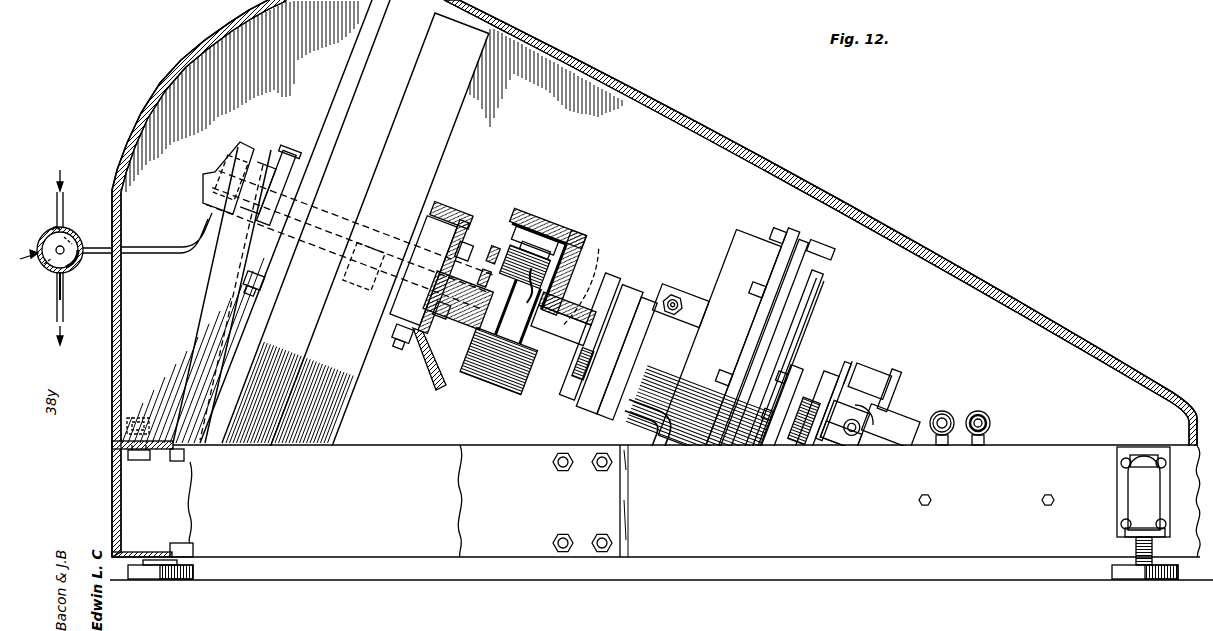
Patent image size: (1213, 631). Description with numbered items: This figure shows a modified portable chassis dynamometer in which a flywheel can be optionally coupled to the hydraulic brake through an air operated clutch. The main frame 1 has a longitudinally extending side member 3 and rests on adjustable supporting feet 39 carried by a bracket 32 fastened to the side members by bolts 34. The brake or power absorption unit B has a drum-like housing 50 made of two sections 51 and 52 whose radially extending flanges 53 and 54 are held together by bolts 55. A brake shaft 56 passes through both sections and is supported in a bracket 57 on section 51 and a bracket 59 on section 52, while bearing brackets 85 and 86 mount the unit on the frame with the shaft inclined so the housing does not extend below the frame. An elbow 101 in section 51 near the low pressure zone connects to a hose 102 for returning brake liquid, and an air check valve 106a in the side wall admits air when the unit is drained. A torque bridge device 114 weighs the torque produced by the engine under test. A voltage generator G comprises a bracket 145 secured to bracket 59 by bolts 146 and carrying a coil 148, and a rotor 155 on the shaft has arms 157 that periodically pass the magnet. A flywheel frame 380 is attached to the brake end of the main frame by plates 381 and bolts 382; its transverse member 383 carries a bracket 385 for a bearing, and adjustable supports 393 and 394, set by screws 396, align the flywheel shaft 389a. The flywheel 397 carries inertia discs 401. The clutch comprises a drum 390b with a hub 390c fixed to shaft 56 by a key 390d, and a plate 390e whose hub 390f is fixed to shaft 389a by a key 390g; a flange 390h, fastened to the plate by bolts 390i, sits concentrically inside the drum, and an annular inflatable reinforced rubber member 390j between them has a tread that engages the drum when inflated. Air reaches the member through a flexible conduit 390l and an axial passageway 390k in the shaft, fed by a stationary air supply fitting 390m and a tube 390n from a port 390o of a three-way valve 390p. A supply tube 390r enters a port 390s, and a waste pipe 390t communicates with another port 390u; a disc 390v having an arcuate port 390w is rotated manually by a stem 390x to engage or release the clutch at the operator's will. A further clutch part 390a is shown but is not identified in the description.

The frame 1 is at (1080, 425).
The side member 3 is at (866, 581).
The bracket 32 is at (1116, 525).
The bolts 34 is at (1135, 455).
The adjustable supporting feet 39 is at (197, 579).
The housing 50 is at (822, 306).
The housing section 51 is at (738, 231).
The housing section 52 is at (810, 322).
The flange 53 is at (790, 229).
The flange 54 is at (806, 240).
The bolts 55 is at (832, 256).
The brake shaft 56 is at (602, 295).
The bracket 57 is at (645, 305).
The bracket 59 is at (814, 366).
The bearing bracket 85 is at (913, 410).
The bearing bracket 86 is at (622, 300).
The elbow 101 is at (666, 408).
The hose 102 is at (626, 450).
The air check valve 106a is at (680, 292).
The torque bridge device 114 is at (610, 412).
The bracket 145 is at (840, 440).
The bolts 146 is at (846, 384).
The coil 148 is at (876, 440).
The rotor 155 is at (890, 378).
The arms 157 is at (875, 365).
The flywheel frame 380 is at (338, 581).
The plate 381 is at (632, 518).
The bolts 382 is at (602, 533).
The transverse member 383 is at (167, 470).
The bracket 385 is at (172, 308).
The flywheel shaft 389a is at (380, 253).
The housing 390a is at (592, 234).
The drum 390b is at (540, 224).
The hub 390c is at (568, 348).
The key 390d is at (598, 275).
The plate 390e is at (503, 255).
The hub 390f is at (498, 361).
The key 390g is at (476, 332).
The flange 390h is at (518, 238).
The bolts 390i is at (512, 250).
The inflatable member 390j is at (530, 240).
The passageway 390k is at (350, 268).
The flexible conduit 390l is at (538, 308).
The air supply fitting 390m is at (226, 164).
The tube 390n is at (165, 246).
The port 390o is at (76, 258).
The three-way valve 390p is at (20, 248).
The tube 390r is at (66, 200).
The port 390s is at (54, 230).
The waste pipe 390t is at (66, 330).
The port 390u is at (57, 290).
The disc 390v is at (48, 264).
The arcuate port 390w is at (72, 242).
The stem 390x is at (66, 284).
The adjustable support 393 is at (312, 150).
The adjustable support 394 is at (398, 306).
The screws 396 is at (252, 290).
The flywheel 397 is at (478, 64).
The inertia discs 401 is at (348, 63).
The brake unit B is at (830, 266).
The voltage generator G is at (860, 358).